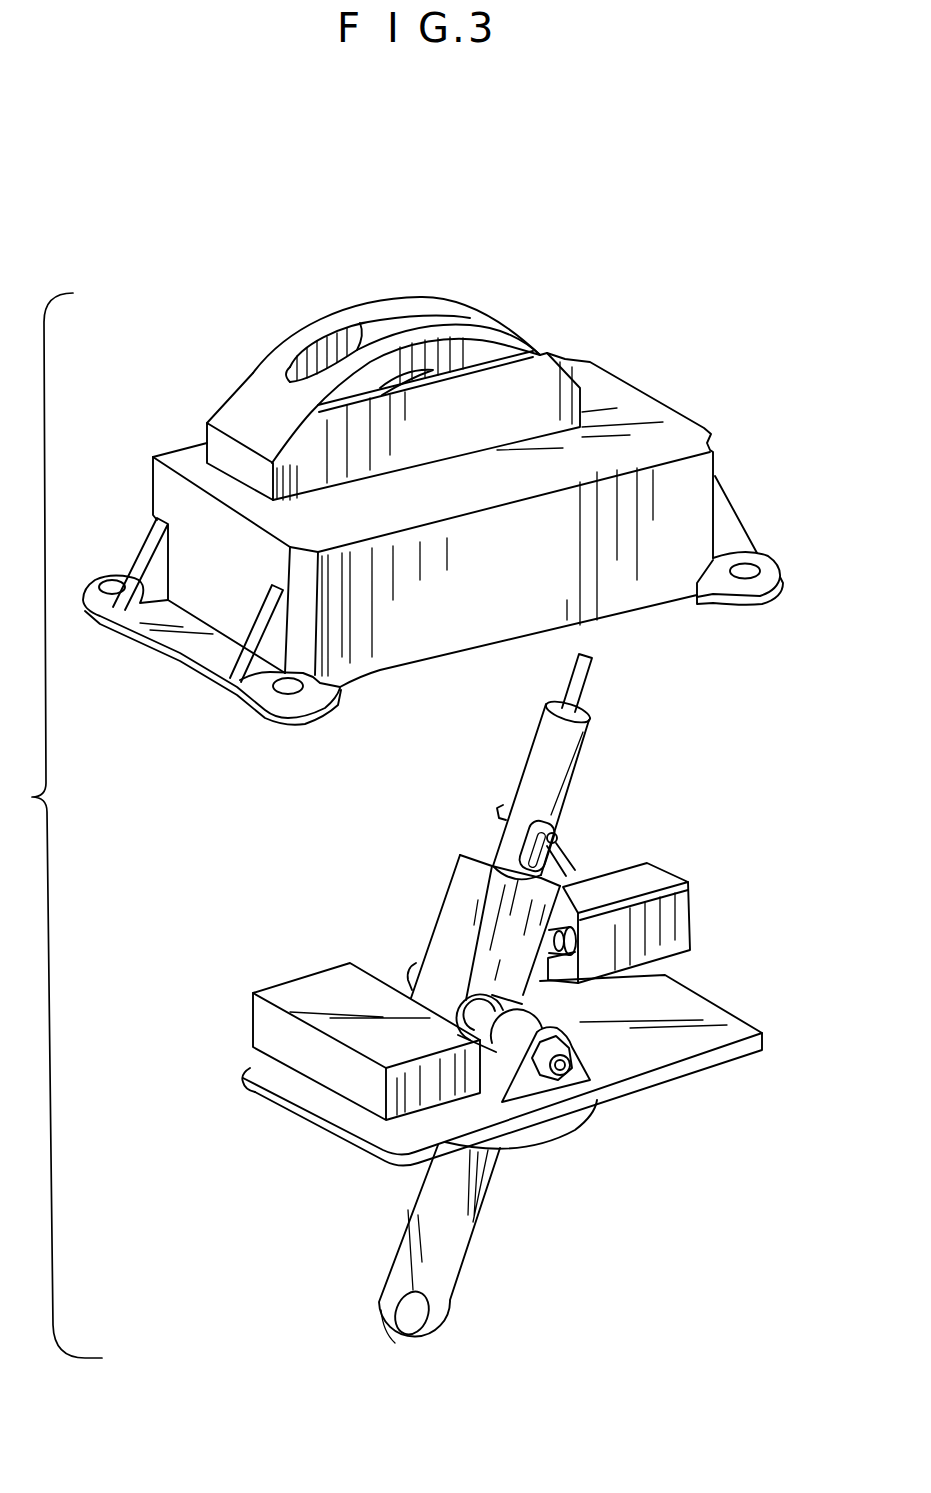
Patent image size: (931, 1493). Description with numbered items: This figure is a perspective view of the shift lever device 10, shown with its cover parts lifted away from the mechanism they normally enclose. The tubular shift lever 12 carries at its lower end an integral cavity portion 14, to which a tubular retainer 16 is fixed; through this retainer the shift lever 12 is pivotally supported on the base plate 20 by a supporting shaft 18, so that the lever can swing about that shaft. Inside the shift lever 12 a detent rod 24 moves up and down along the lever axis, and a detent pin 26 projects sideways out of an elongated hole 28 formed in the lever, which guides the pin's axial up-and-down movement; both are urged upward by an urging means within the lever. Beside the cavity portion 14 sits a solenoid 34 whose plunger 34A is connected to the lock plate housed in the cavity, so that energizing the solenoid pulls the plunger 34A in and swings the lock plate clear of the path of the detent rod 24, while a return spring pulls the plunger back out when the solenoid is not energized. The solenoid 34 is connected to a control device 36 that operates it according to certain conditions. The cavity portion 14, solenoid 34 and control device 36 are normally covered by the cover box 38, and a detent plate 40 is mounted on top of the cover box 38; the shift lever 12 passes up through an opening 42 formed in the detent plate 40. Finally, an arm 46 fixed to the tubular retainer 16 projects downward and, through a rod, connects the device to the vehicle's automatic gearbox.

The shift lever device 10 is at (745, 330).
The shift lever 12 is at (532, 777).
The cavity portion 14 is at (463, 917).
The tubular retainer 16 is at (513, 1035).
The supporting shaft 18 is at (566, 1072).
The base plate 20 is at (683, 1072).
The detent rod 24 is at (588, 684).
The detent pin 26 is at (565, 825).
The elongated hole 28 is at (556, 841).
The solenoid 34 is at (700, 907).
The plunger 34A is at (562, 970).
The control device 36 is at (310, 990).
The cover box 38 is at (693, 423).
The detent plate 40 is at (273, 390).
The opening 42 is at (401, 322).
The arm 46 is at (453, 1267).